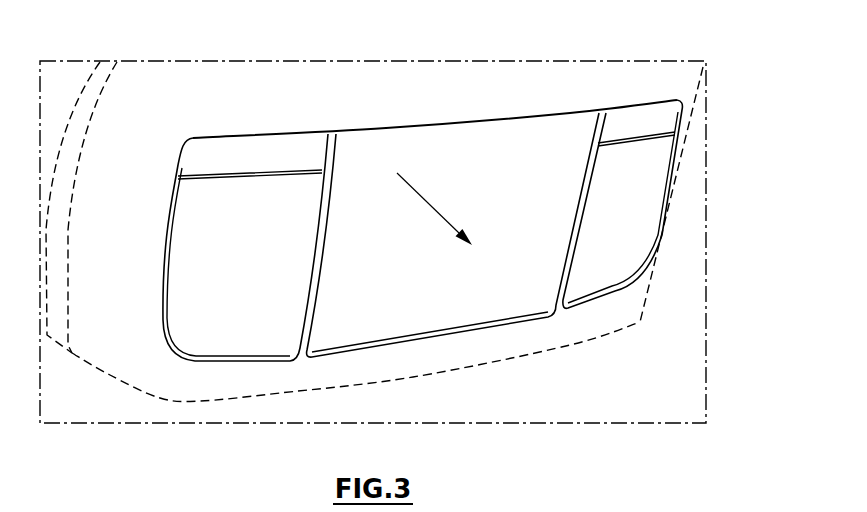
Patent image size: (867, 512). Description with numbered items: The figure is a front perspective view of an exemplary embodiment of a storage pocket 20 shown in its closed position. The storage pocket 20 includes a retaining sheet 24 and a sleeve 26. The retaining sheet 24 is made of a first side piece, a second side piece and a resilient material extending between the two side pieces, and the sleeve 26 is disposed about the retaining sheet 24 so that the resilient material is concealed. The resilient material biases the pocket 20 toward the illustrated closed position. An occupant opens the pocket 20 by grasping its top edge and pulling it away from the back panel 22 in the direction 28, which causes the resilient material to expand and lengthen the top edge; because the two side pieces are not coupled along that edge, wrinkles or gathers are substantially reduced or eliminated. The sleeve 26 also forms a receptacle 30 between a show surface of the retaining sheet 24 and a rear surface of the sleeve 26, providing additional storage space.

The storage pocket 20 is at (484, 90).
The back panel 22 is at (207, 103).
The retaining sheet 24 is at (257, 327).
The sleeve 26 is at (385, 128).
The direction 28 is at (445, 220).
The receptacle 30 is at (605, 270).